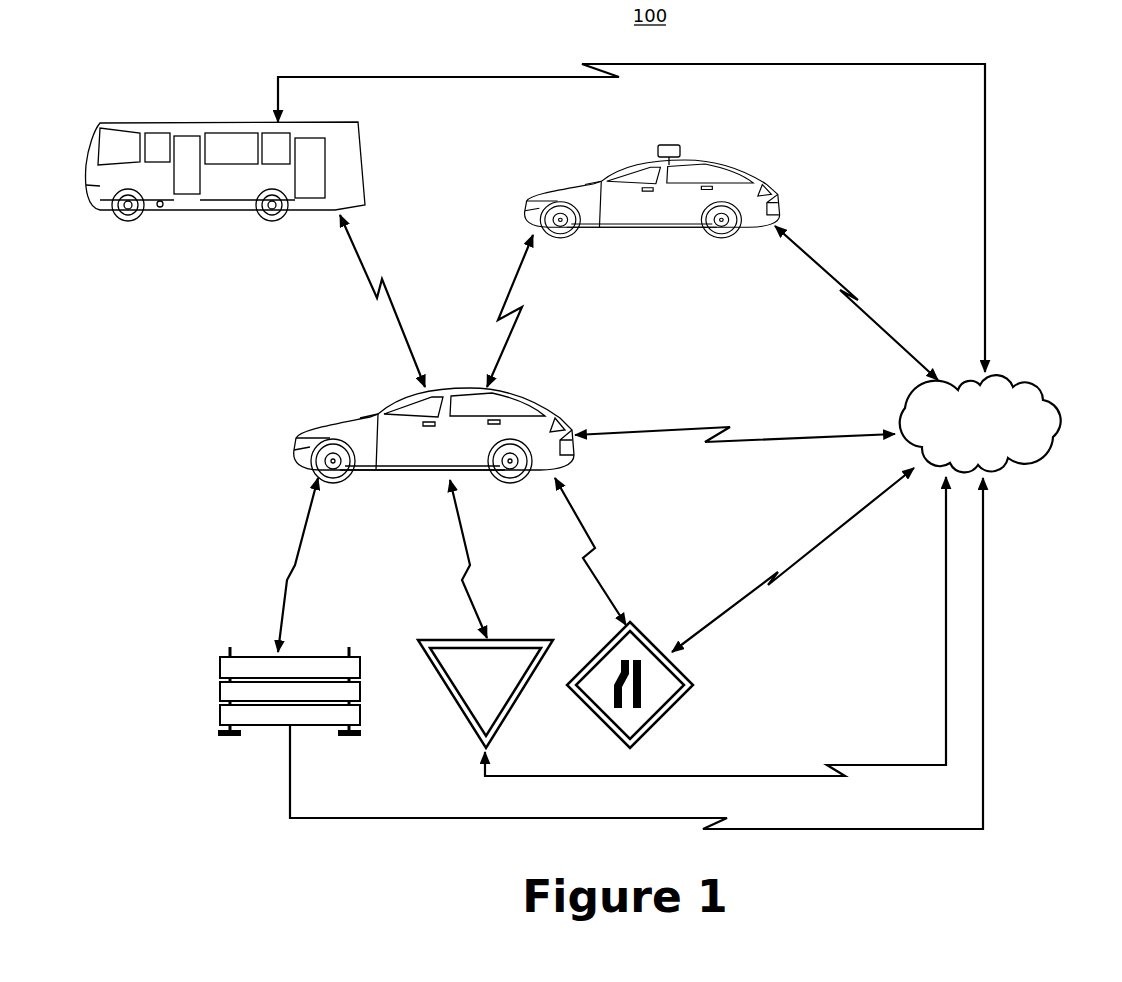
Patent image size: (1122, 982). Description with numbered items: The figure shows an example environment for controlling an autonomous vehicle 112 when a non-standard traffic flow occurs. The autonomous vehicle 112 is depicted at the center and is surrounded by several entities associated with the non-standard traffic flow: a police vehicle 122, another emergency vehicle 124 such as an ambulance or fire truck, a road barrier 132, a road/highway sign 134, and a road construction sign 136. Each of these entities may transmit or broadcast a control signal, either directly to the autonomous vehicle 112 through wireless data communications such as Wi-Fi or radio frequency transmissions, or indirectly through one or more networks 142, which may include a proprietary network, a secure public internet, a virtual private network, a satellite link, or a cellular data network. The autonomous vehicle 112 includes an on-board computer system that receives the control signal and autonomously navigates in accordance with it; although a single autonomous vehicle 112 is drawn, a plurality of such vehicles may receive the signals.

The autonomous vehicle 112 is at (322, 423).
The police vehicle 122 is at (580, 183).
The emergency vehicle 124 is at (186, 121).
The road barrier 132 is at (220, 658).
The road/highway sign 134 is at (432, 640).
The road construction sign 136 is at (600, 650).
The networks 142 is at (1034, 376).